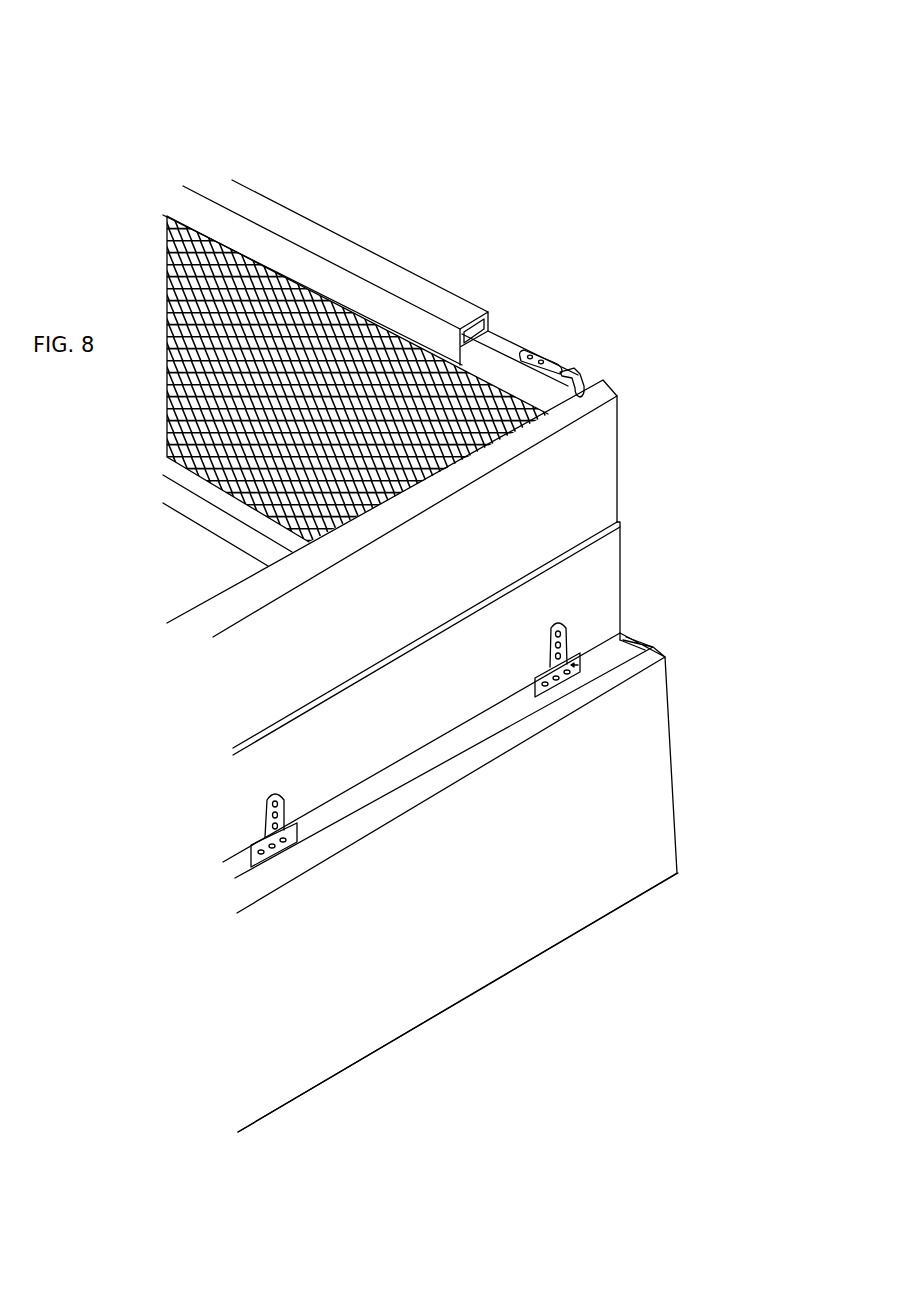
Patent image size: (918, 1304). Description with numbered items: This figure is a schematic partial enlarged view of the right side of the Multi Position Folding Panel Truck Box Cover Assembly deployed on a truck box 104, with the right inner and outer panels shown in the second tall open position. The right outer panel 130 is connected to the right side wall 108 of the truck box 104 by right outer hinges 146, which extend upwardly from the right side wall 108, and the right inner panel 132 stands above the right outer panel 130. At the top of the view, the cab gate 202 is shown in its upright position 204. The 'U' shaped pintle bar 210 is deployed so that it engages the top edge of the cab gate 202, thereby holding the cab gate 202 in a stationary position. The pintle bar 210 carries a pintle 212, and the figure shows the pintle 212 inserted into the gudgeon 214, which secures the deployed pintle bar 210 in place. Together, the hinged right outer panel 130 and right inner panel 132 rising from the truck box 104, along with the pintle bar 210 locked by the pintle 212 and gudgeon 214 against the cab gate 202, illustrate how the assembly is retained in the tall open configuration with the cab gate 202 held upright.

The truck box 104 is at (417, 987).
The right side wall 108 is at (627, 845).
The right outer panel 130 is at (588, 570).
The right inner panel 132 is at (582, 460).
The right outer hinges 146 is at (632, 622).
The cab gate 202 is at (273, 303).
The upright position 204 is at (268, 128).
The pintle bar 210 is at (385, 272).
The pintle 212 is at (560, 362).
The gudgeon 214 is at (598, 377).